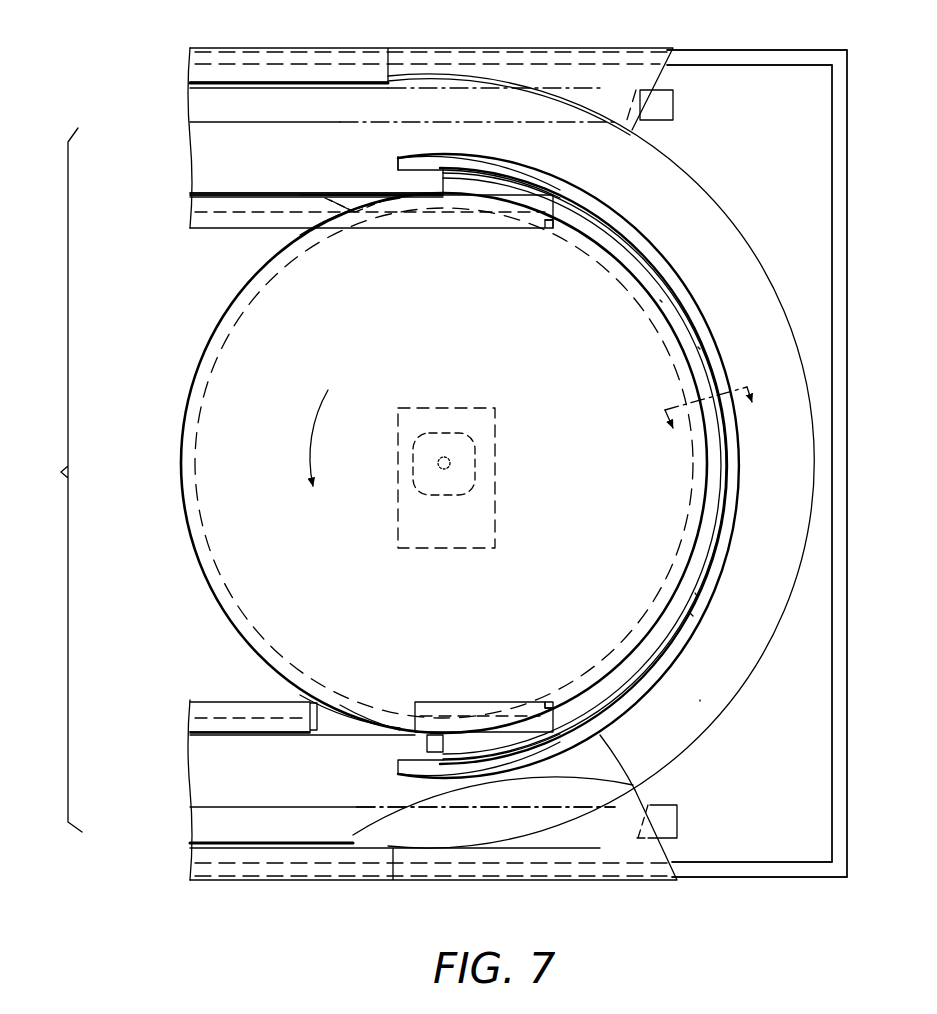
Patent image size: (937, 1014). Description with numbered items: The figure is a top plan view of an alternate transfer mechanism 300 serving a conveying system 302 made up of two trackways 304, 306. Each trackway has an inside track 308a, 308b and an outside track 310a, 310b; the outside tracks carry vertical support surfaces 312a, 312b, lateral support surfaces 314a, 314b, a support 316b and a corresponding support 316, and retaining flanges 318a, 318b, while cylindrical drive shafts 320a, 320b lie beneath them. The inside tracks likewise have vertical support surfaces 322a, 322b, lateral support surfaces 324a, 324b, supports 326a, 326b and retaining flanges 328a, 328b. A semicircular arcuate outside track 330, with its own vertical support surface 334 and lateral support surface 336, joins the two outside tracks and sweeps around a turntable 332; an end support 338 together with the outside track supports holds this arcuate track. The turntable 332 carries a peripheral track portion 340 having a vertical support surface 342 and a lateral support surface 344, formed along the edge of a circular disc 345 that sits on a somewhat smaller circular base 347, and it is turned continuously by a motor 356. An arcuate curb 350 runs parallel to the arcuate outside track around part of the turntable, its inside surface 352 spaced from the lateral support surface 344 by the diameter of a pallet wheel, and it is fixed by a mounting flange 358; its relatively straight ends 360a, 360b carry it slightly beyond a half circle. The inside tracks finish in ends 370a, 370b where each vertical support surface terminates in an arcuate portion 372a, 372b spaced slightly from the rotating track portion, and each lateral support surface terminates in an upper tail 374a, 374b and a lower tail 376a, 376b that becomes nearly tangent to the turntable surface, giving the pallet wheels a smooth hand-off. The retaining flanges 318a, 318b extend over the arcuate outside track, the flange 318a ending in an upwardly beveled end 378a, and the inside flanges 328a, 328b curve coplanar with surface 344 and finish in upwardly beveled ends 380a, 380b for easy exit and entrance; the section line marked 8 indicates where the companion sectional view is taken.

The transfer mechanism 300 is at (860, 302).
The conveying system 302 is at (48, 480).
The trackway 304 is at (186, 850).
The trackway 306 is at (185, 107).
The inside track 308a is at (210, 742).
The inside track 308b is at (211, 188).
The outside track 310a is at (262, 844).
The outside track 310b is at (340, 90).
The vertical support surface 312a is at (350, 842).
The vertical support surface 312b is at (250, 86).
The lateral support surface 314a is at (386, 842).
The lateral support surface 314b is at (362, 90).
The lower frame member 316 is at (782, 878).
The support 316b is at (756, 60).
The retaining flange 318a is at (345, 880).
The retaining flange 318b is at (303, 78).
The cylindrical drive shaft 320a is at (562, 803).
The cylindrical drive shaft 320b is at (402, 139).
The vertical support surface 322a is at (330, 728).
The vertical support surface 322b is at (252, 193).
The lateral support surface 324a is at (262, 736).
The lateral support surface 324b is at (312, 193).
The support 326a is at (340, 692).
The support 326b is at (263, 225).
The retaining flange 328a is at (190, 718).
The retaining flange 328b is at (197, 229).
The arcuate outside track 330 is at (738, 688).
The turntable 332 is at (578, 498).
The vertical support surface 334 is at (790, 791).
The lateral support surface 336 is at (697, 747).
The end support 338 is at (868, 762).
The track portion 340 is at (710, 524).
The vertical support surface 342 is at (698, 462).
The lateral support surface 344 is at (706, 488).
The circular disc 345 is at (665, 298).
The circular base 347 is at (700, 348).
The arcuate curb 350 is at (725, 568).
The inside surface 352 is at (697, 595).
The motor 356 is at (495, 413).
The mounting flange 358 is at (692, 616).
The end 360a is at (433, 737).
The end 360b is at (430, 158).
The end 370a is at (404, 746).
The end 370b is at (412, 183).
The arcuate portion 372a is at (380, 734).
The arcuate portion 372b is at (345, 206).
The upper tail 374a is at (385, 722).
The upper tail 374b is at (385, 194).
The lower tail 376a is at (474, 760).
The lower tail 376b is at (490, 163).
The upwardly beveled end 378a is at (676, 818).
The upwardly beveled end 380a is at (550, 695).
The upwardly beveled end 380b is at (549, 232).
The section line 8- 8 is at (710, 416).